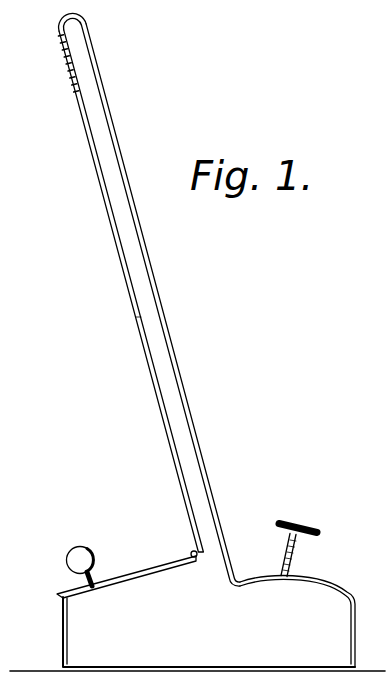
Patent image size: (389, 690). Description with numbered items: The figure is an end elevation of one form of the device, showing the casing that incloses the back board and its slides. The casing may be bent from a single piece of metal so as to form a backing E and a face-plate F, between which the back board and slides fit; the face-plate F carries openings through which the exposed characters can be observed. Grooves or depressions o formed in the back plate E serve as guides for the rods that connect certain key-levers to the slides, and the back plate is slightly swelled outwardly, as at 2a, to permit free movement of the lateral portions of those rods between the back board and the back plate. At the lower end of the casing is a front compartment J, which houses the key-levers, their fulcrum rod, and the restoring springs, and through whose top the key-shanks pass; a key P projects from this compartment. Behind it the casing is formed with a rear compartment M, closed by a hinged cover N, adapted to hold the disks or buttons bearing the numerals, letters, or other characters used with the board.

The swelled portion of the back plate 2a is at (50, 90).
The face-plate F is at (159, 295).
The backing E is at (167, 458).
The grooves or depressions o is at (127, 318).
The hinged cover N is at (146, 569).
The rear compartment M is at (209, 632).
The front compartment J is at (297, 621).
The thumb screw P is at (282, 530).